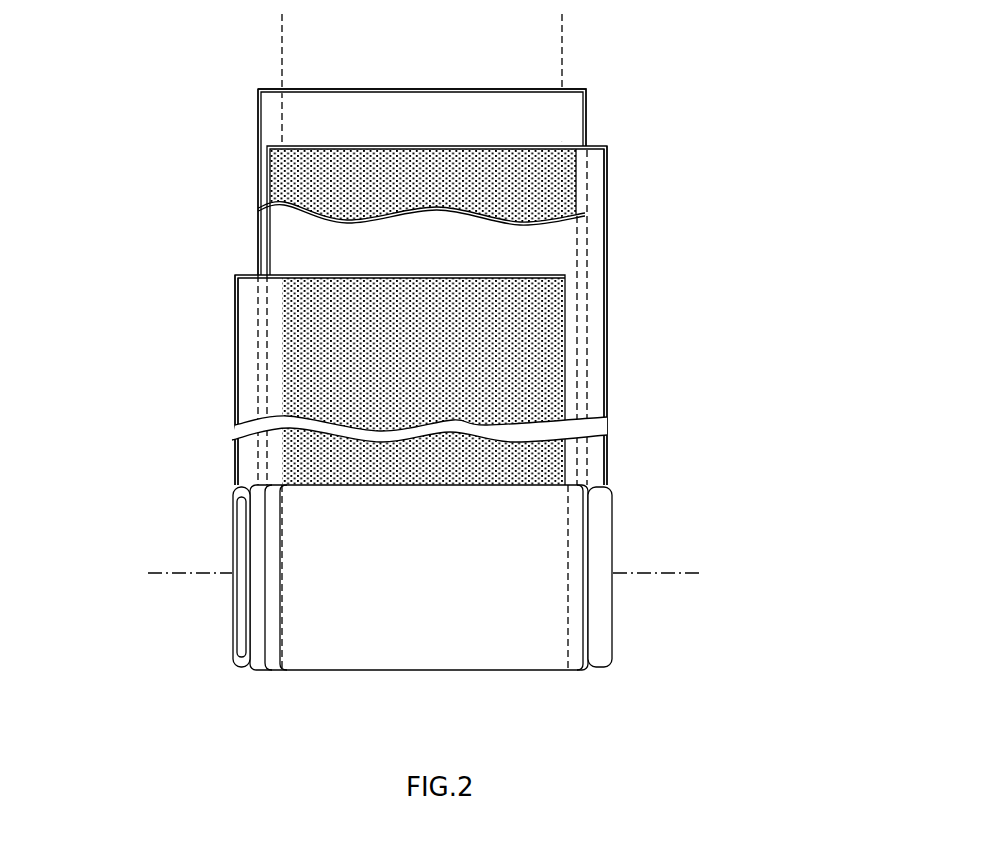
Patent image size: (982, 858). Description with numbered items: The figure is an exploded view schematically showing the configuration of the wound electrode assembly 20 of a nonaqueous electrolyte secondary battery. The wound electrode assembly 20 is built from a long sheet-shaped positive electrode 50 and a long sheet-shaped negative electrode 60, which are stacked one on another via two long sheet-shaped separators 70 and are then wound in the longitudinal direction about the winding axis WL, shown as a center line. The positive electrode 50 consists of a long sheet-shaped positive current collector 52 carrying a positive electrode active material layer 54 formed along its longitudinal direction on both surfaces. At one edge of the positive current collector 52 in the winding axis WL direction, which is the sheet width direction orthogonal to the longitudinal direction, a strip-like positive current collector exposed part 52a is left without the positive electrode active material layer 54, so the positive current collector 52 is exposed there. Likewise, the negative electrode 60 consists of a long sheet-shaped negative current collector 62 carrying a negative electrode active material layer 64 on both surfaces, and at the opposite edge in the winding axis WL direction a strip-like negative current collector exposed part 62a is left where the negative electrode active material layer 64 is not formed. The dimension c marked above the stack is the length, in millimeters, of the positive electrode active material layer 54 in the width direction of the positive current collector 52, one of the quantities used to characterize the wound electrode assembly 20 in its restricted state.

The wound electrode assembly 20 is at (482, 647).
The positive electrode 50 is at (235, 347).
The positive current collector 52 is at (235, 413).
The positive current collector exposed part 52a is at (248, 377).
The positive electrode active material layer 54 is at (283, 287).
The negative electrode 60 is at (607, 222).
The negative current collector 62 is at (607, 322).
The negative current collector exposed part 62a is at (593, 270).
The negative electrode active material layer 64 is at (573, 170).
The separator 70 is at (275, 125).
The winding axis WL is at (685, 572).
The length c of the positive electrode active material layer in the width direction c is at (282, 30).